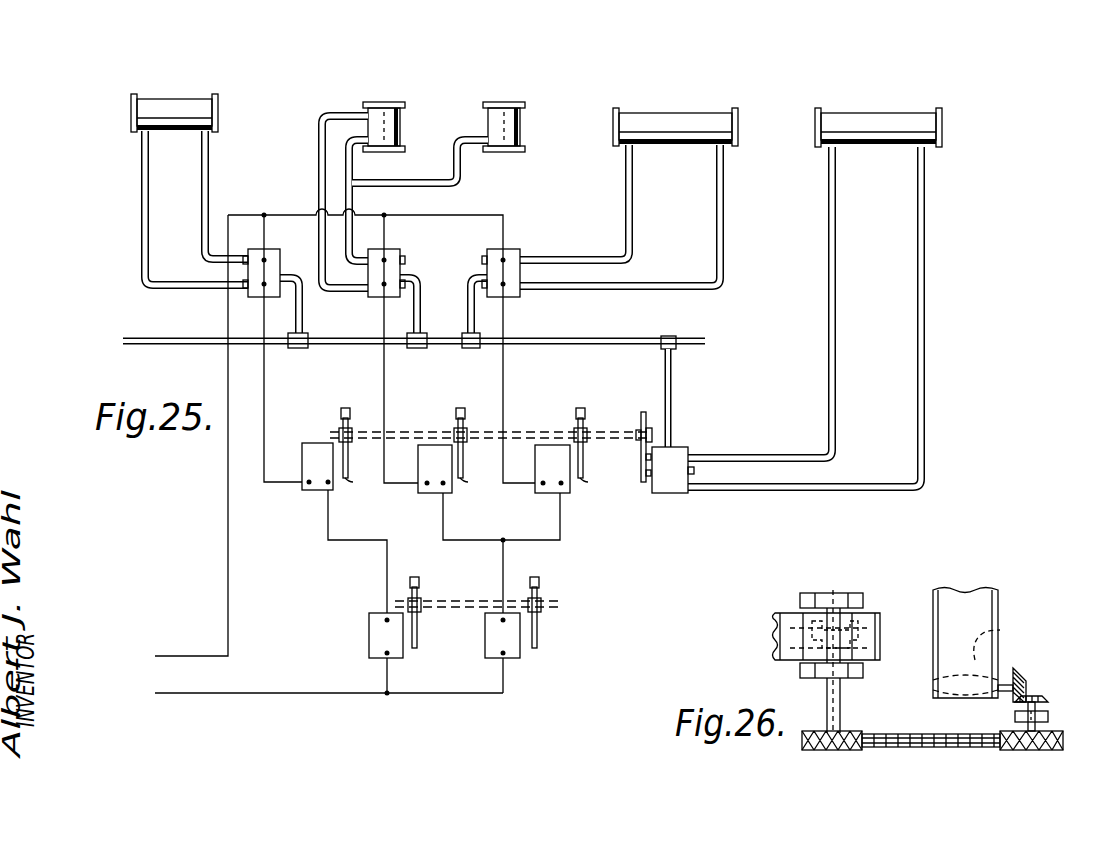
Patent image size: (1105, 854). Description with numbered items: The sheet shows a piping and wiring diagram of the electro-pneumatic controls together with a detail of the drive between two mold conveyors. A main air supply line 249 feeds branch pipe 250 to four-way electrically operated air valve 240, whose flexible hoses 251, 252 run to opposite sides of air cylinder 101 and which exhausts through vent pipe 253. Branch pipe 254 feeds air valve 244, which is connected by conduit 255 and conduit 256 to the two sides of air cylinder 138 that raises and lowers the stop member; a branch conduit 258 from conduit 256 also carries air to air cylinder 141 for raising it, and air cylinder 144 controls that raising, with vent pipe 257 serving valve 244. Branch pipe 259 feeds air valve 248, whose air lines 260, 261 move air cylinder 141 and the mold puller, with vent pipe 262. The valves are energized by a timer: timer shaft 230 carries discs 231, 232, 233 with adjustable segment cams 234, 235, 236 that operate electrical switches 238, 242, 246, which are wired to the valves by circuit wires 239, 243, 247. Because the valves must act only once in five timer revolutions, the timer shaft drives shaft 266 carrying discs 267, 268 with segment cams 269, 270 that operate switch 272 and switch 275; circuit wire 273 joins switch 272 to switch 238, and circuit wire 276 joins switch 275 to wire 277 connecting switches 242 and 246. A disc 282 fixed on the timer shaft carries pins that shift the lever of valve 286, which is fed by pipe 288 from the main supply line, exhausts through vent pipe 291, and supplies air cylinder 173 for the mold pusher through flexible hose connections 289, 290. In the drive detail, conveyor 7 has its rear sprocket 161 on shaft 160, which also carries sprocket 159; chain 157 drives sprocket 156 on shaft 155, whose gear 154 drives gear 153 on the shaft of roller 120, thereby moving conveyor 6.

In FIG. 25, the air cylinder 101 is at (196, 78).
In FIG. 25, the air cylinder 138 is at (392, 93).
In FIG. 25, the air cylinder 144 is at (492, 103).
In FIG. 25, the air cylinder 141 is at (700, 113).
In FIG. 25, the air cylinder 173 is at (900, 97).
In FIG. 25, the flexible hose 251 is at (141, 170).
In FIG. 25, the flexible hose 252 is at (211, 160).
In FIG. 25, the conduit 255 is at (318, 136).
In FIG. 25, the branch conduit 258 is at (397, 184).
In FIG. 25, the air line 260 is at (634, 228).
In FIG. 25, the air line 261 is at (725, 236).
In FIG. 25, the branch pipe 250 is at (304, 303).
In FIG. 25, the branch pipe 254 is at (421, 331).
In FIG. 25, the branch pipe 259 is at (469, 280).
In FIG. 25, the flexible hose connection 289 is at (803, 458).
In FIG. 25, the flexible hose connection 290 is at (755, 491).
In FIG. 25, the vent pipe 291 is at (695, 472).
In FIG. 25, the main air supply line 249 is at (150, 341).
In FIG. 25, the pipe 288 is at (672, 384).
In FIG. 25, the valve 286 is at (688, 494).
In FIG. 25, the vent pipe 253 is at (281, 253).
In FIG. 25, the four-way electrically operated air valve 240 is at (249, 291).
In FIG. 25, the vent pipe 257 is at (403, 253).
In FIG. 25, the four-way electrically operated air valve 244 is at (373, 299).
In FIG. 25, the four-way electrically operated air valve 248 is at (521, 271).
In FIG. 25, the vent pipe 262 is at (489, 257).
In FIG. 25, the conduit 256 is at (359, 214).
In FIG. 25, the circuit wire 239 is at (265, 376).
In FIG. 25, the circuit wire 243 is at (386, 371).
In FIG. 25, the circuit wire 247 is at (505, 369).
In FIG. 25, the circuit wire 273 is at (386, 568).
In FIG. 25, the circuit wire 276 is at (503, 562).
In FIG. 25, the circuit wire 277 is at (443, 540).
In FIG. 25, the electrical switch 238 is at (311, 492).
In FIG. 25, the electrical switch 242 is at (446, 494).
In FIG. 25, the electrical switch 246 is at (563, 494).
In FIG. 25, the switch 272 is at (369, 636).
In FIG. 25, the switch 275 is at (485, 650).
In FIG. 25, the timer shaft 230 is at (562, 432).
In FIG. 25, the disc 231 is at (349, 478).
In FIG. 25, the disc 232 is at (463, 478).
In FIG. 25, the disc 233 is at (583, 477).
In FIG. 25, the segment cam 234 is at (346, 408).
In FIG. 25, the segment cam 235 is at (468, 401).
In FIG. 25, the segment cam 236 is at (595, 401).
In FIG. 25, the disc 282 is at (645, 411).
In FIG. 25, the shaft 266 is at (562, 604).
In FIG. 25, the disc 267 is at (419, 641).
In FIG. 25, the disc 268 is at (539, 648).
In FIG. 25, the segment cam 269 is at (420, 584).
In FIG. 25, the segment cam 270 is at (537, 584).
In FIG. 26, the conveyor 7 is at (774, 633).
In FIG. 26, the rear sprocket 161 is at (797, 620).
In FIG. 26, the shaft 160 is at (826, 693).
In FIG. 26, the chain 157 is at (920, 720).
In FIG. 26, the sprocket 159 is at (826, 741).
In FIG. 26, the sprocket 156 is at (1028, 750).
In FIG. 26, the conveyor 6 is at (984, 599).
In FIG. 26, the roller 120 is at (1000, 631).
In FIG. 26, the gear 153 is at (1018, 675).
In FIG. 26, the gear 154 is at (1040, 700).
In FIG. 26, the shaft 155 is at (1046, 721).